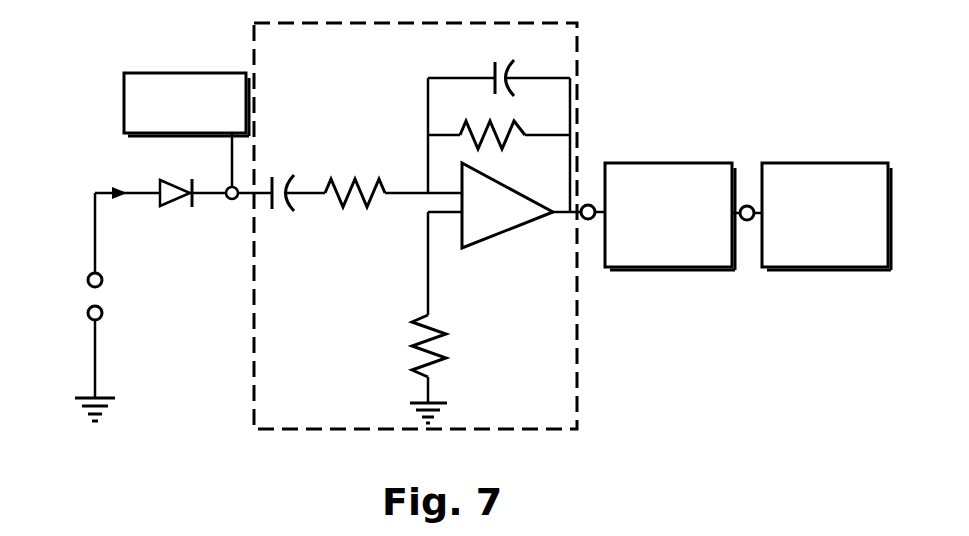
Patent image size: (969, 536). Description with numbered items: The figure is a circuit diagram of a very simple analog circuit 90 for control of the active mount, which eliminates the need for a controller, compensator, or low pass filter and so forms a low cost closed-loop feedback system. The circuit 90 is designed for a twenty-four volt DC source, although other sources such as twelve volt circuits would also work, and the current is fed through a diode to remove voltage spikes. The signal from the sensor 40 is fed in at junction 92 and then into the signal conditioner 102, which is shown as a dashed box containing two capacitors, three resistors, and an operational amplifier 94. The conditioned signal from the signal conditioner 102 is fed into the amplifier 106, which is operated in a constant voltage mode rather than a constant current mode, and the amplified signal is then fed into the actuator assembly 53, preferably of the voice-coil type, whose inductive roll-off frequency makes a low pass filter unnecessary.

The sensor 40 is at (124, 121).
The analog circuit 90 is at (231, 364).
The junction 92 is at (232, 200).
The operational amplifier 94 is at (483, 249).
The signal conditioner 102 is at (466, 226).
The amplifier 106 is at (618, 163).
The actuator assembly 53 is at (777, 163).